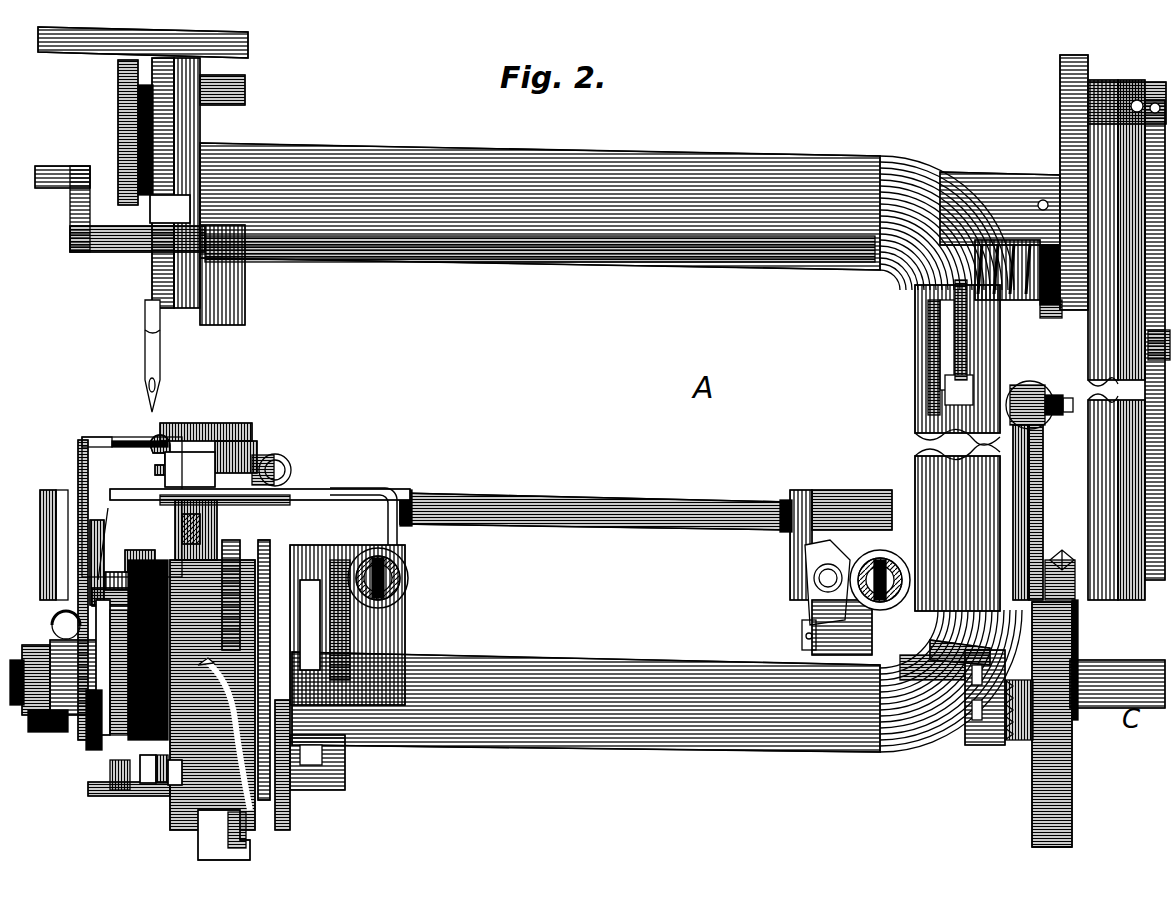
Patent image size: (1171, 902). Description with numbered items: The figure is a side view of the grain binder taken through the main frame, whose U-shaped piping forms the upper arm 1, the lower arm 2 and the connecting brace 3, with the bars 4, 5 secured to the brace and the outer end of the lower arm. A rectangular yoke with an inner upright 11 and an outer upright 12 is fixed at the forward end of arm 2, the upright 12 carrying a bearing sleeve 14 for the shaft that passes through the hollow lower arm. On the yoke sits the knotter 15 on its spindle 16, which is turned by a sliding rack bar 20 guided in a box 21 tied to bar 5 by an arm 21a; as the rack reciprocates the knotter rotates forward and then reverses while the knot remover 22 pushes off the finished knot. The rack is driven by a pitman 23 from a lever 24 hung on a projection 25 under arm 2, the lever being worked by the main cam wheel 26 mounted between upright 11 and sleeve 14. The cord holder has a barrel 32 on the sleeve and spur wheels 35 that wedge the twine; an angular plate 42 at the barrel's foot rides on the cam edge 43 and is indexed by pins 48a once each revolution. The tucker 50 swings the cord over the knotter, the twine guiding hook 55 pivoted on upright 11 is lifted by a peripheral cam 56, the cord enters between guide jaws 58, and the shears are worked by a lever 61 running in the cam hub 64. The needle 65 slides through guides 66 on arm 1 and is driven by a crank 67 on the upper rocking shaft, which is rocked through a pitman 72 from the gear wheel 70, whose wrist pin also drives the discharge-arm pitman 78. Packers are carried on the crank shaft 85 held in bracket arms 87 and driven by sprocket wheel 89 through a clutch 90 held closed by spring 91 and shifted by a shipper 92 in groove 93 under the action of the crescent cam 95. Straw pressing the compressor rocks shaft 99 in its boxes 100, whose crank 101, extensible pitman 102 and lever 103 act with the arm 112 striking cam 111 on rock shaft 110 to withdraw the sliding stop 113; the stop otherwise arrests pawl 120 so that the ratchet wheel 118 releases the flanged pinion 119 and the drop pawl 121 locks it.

The upper arm 1 is at (607, 210).
The lower arm 2 is at (678, 748).
The connecting brace 3 is at (995, 358).
The bar 4 is at (855, 590).
The bar 5 is at (385, 578).
The inner upright 11 is at (346, 638).
The outer upright 12 is at (78, 580).
The bearing sleeve 14 is at (105, 640).
The knotter 15 is at (188, 424).
The spindle 16 is at (140, 556).
The sliding rack bar 20 is at (196, 523).
The box 21 is at (240, 560).
The arm 21a is at (340, 492).
The knot remover 22 is at (150, 432).
The pitman 23 is at (312, 492).
The lever 24 is at (272, 630).
The projection 25 is at (312, 795).
The cam wheel 26 is at (190, 815).
The barrel 32 is at (95, 720).
The spur wheels 35 is at (138, 574).
The angular plate 42 is at (104, 796).
The cam edge 43 is at (166, 795).
The pins 48a is at (154, 790).
The tucker 50 is at (240, 440).
The twine guiding hook 55 is at (148, 507).
The peripheral cam 56 is at (250, 856).
The guide jaws 58 is at (124, 485).
The lever 61 is at (125, 540).
The cam hub 64 is at (34, 646).
The needle 65 is at (145, 318).
The guides 66 is at (197, 191).
The crank 67 is at (120, 124).
The gear wheel 70 is at (1072, 755).
The pitman 72 is at (1095, 358).
The pitman 78 is at (1145, 476).
The crank shaft 85 is at (484, 264).
The bracket arms 87 is at (140, 252).
The sprocket wheel 89 is at (1160, 350).
The clutch 90 is at (1060, 300).
The spiral spring 91 is at (1012, 300).
The shipper 92 is at (1045, 312).
The circumferential groove 93 is at (1068, 200).
The crescent cam 95 is at (1060, 156).
The rocking shaft 99 is at (632, 527).
The boxes 100 is at (400, 490).
The crank 101 is at (1030, 468).
The pitman 102 is at (1052, 398).
The lever 103 is at (1043, 488).
The rock shaft 110 is at (822, 583).
The cam 111 is at (837, 597).
The arm 112 is at (790, 538).
The sliding stop 113 is at (965, 643).
The ratchet toothed wheel 118 is at (968, 740).
The flanged pinion 119 is at (1020, 745).
The pawl 120 is at (932, 742).
The drop pawl 121 is at (1080, 630).